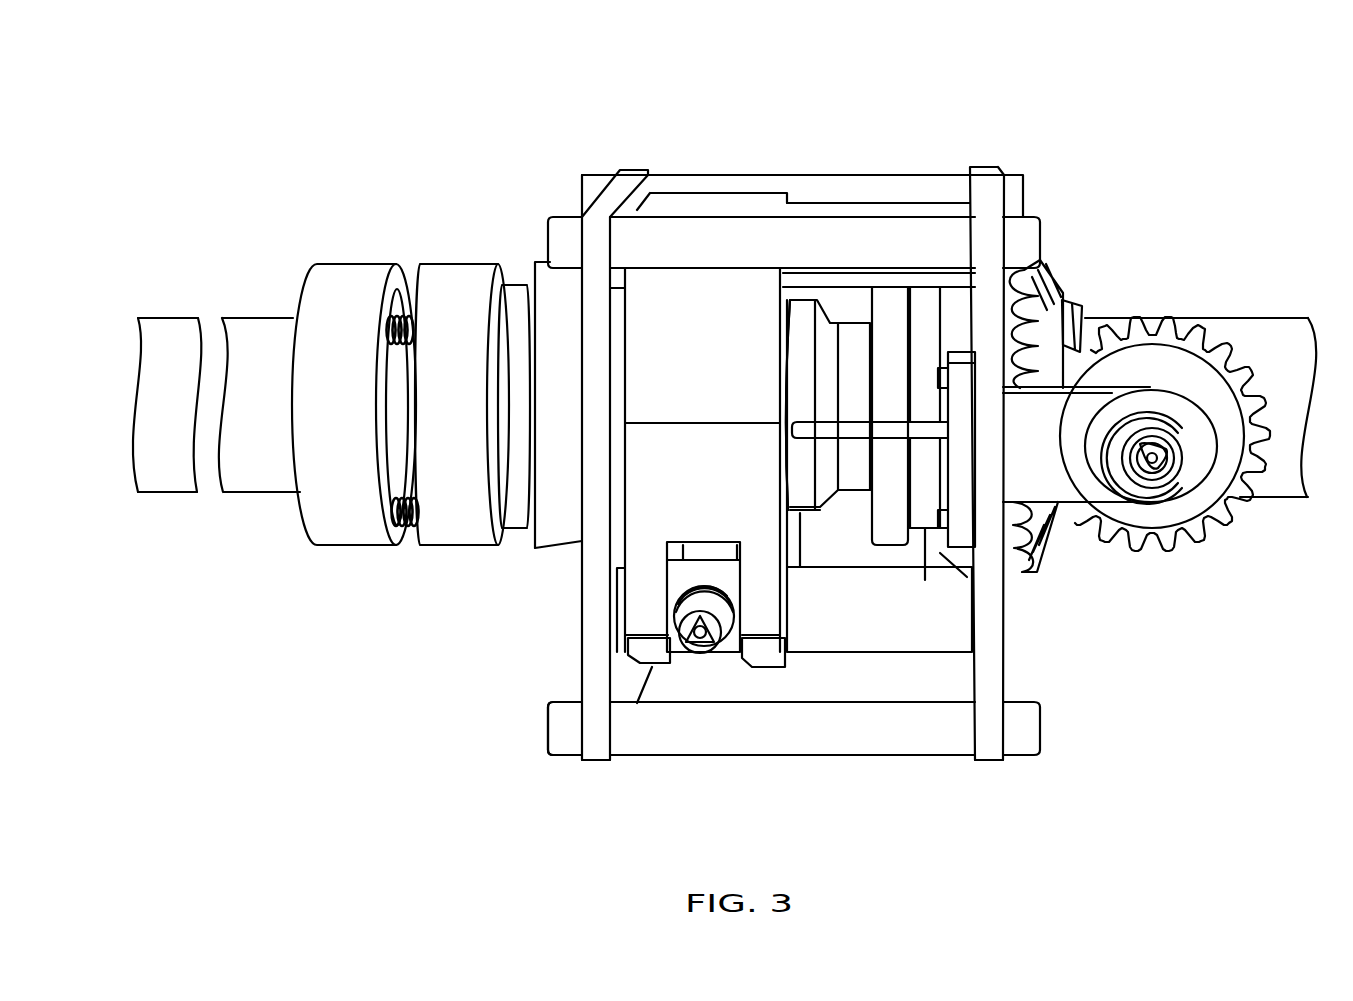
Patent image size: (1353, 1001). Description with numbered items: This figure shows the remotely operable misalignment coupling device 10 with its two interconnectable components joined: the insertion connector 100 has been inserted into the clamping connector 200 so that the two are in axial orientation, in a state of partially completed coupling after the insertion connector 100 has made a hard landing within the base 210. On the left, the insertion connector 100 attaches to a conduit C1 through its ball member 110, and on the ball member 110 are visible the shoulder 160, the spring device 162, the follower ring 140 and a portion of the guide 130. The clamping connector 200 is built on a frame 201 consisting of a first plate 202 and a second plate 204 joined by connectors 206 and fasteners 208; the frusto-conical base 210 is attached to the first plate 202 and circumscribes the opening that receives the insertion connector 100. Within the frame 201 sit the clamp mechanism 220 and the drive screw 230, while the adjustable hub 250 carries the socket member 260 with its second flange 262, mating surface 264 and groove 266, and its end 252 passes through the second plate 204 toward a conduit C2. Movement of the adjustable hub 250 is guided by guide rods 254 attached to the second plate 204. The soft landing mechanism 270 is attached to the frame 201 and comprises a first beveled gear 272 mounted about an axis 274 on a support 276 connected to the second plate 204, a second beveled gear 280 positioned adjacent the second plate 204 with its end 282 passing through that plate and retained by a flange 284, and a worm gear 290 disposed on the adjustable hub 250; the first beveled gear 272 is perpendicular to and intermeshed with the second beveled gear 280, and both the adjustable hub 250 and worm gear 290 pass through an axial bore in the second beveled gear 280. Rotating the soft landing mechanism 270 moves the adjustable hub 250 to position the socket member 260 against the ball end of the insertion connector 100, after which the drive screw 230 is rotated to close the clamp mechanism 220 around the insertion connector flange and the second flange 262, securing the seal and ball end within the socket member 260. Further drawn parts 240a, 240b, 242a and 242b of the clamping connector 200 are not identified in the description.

The remotely operable misalignment coupling device 10 is at (428, 52).
The insertion connector 100 is at (196, 194).
The conduit C1 is at (175, 325).
The ball member 110 is at (263, 325).
The shoulder 160 is at (364, 263).
The spring device 162 is at (413, 530).
The follower ring 140 is at (450, 268).
The guide 130 is at (518, 284).
The base 210 is at (560, 533).
The clamping connector 200 is at (1098, 108).
The frame 201 is at (577, 613).
The first plate 202 is at (607, 762).
The second plate 204 is at (988, 763).
The connectors 206 is at (688, 743).
The fasteners 208 is at (567, 727).
The clamp mechanism 220 is at (723, 302).
The drive screw 230 is at (710, 660).
The first bracket 240a is at (935, 277).
The second bracket 240b is at (913, 207).
The lower housing 242a is at (955, 633).
The housing portion 242b is at (940, 553).
The adjustable hub 250 is at (893, 305).
The end 252 is at (1177, 318).
The guide rods 254 is at (793, 425).
The socket member 260 is at (837, 305).
The second flange 262 is at (808, 500).
The mating surface 264 is at (790, 482).
The groove 266 is at (855, 482).
The soft landing mechanism 270 is at (1166, 254).
The first beveled gear 272 is at (1267, 415).
The axis 274 is at (1167, 473).
The support 276 is at (1050, 490).
The second beveled gear 280 is at (1055, 277).
The end 282 is at (928, 548).
The flange 284 is at (957, 295).
The worm gear 290 is at (1072, 303).
The conduit C2 is at (1250, 320).